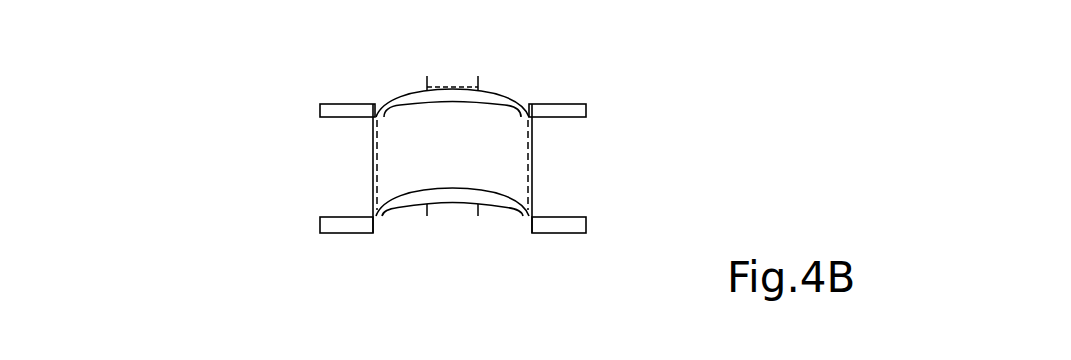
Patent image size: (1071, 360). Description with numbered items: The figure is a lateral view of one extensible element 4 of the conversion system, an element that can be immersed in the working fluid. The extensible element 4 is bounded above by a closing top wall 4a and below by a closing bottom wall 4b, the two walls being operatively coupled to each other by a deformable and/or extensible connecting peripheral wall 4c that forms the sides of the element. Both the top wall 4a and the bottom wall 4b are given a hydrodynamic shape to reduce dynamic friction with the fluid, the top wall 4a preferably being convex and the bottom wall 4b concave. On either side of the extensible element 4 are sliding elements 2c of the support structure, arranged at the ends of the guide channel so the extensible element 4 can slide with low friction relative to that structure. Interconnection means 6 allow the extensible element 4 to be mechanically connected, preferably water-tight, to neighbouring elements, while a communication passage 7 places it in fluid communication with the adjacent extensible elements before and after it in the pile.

The sliding elements 2c is at (318, 109).
The extensible element 4 is at (548, 148).
The closing top wall 4a is at (508, 98).
The closing bottom wall 4b is at (452, 205).
The connecting peripheral wall 4c is at (377, 172).
The interconnection means 6 is at (427, 73).
The communication passage 7 is at (487, 75).